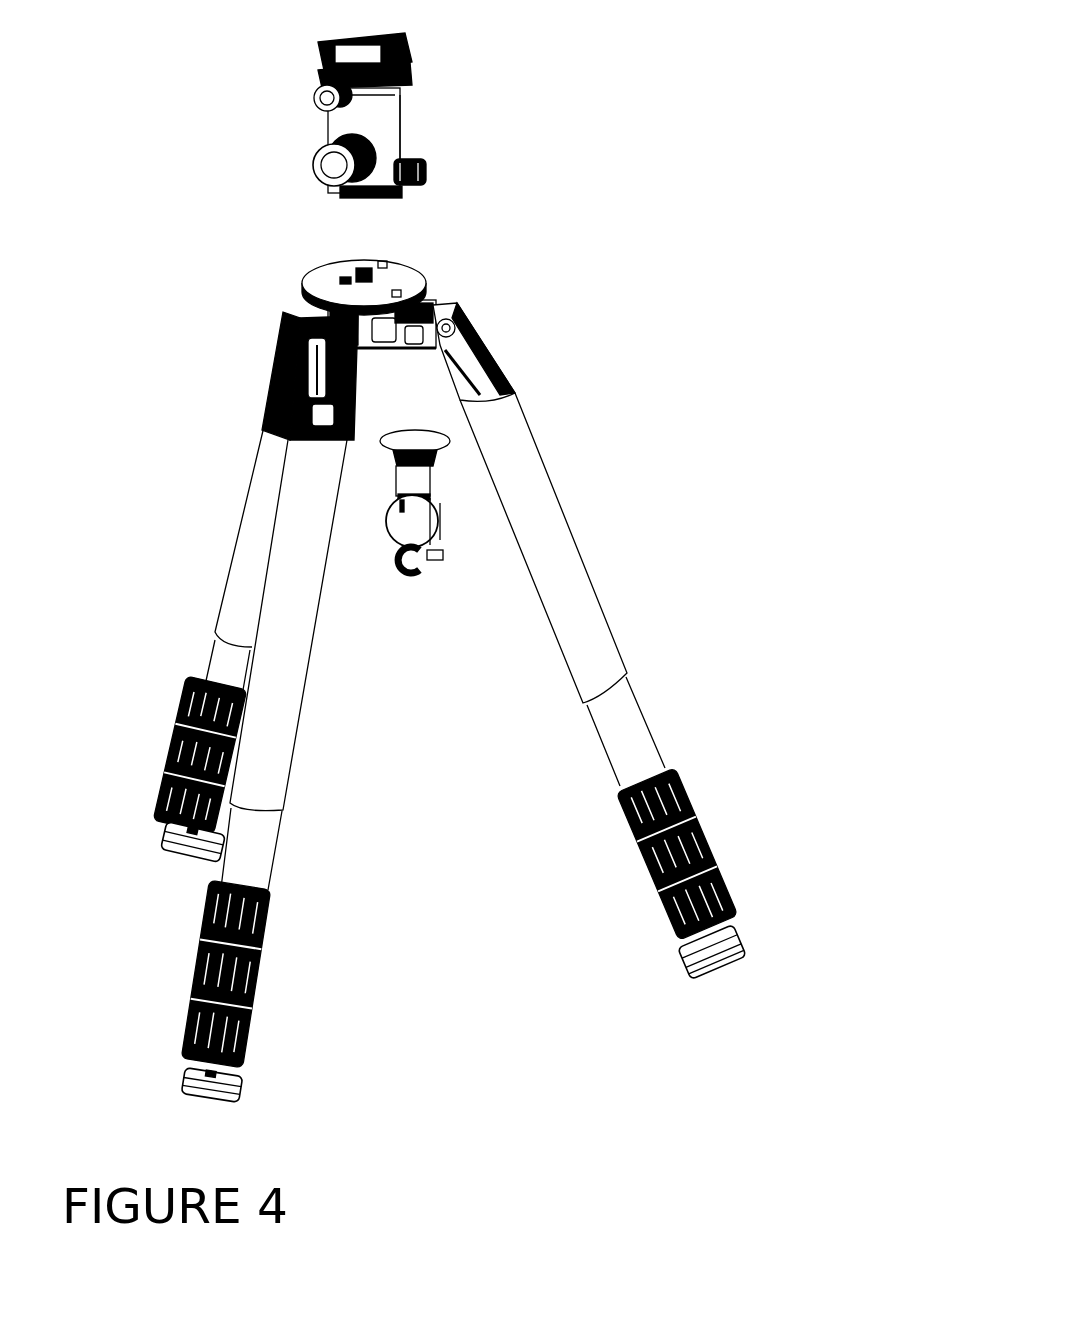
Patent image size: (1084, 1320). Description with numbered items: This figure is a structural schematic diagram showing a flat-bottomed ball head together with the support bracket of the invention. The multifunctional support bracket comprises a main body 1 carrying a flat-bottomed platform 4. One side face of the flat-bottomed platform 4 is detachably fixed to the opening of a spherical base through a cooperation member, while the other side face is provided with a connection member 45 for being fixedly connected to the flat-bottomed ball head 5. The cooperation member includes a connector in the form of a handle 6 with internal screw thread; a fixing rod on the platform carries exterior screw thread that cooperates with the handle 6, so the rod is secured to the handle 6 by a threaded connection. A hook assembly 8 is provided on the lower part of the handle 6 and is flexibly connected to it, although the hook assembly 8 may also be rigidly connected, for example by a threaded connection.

The main body 1 is at (677, 553).
The flat-bottomed platform 4 is at (400, 283).
The connection member 45 is at (360, 268).
The flat-bottomed ball head 5 is at (377, 148).
The handle 6 is at (437, 490).
The hook assembly 8 is at (387, 562).